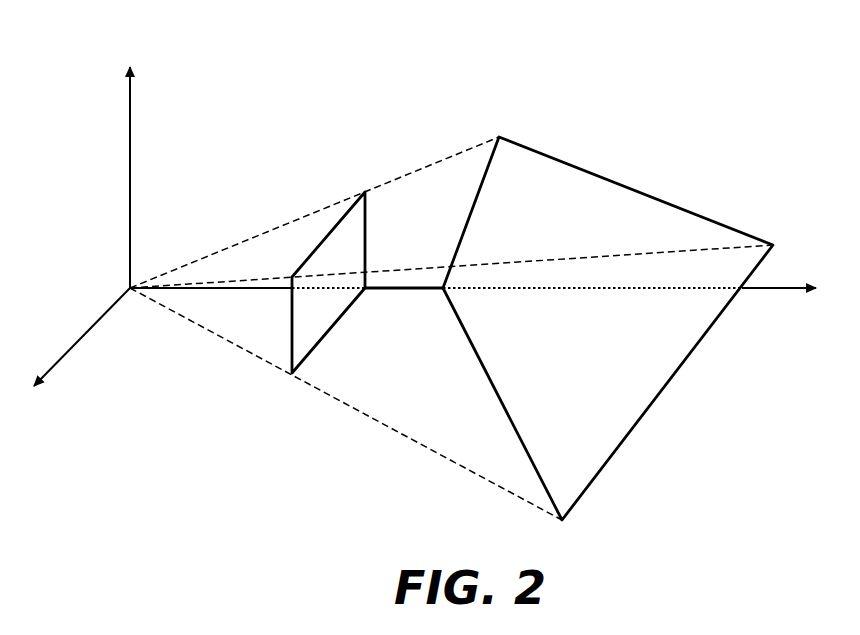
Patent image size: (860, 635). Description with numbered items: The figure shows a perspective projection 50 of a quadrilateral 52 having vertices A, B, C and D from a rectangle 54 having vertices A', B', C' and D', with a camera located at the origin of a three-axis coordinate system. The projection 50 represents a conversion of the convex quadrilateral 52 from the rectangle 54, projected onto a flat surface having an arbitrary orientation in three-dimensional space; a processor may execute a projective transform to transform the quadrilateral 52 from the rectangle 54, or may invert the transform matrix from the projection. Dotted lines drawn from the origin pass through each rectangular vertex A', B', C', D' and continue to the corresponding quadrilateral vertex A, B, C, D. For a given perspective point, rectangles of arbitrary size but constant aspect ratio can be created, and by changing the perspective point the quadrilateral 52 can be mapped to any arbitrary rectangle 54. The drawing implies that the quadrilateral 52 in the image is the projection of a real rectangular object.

The perspective projection 50 is at (302, 58).
The quadrilateral 52 is at (610, 176).
The rectangle 54 is at (326, 342).